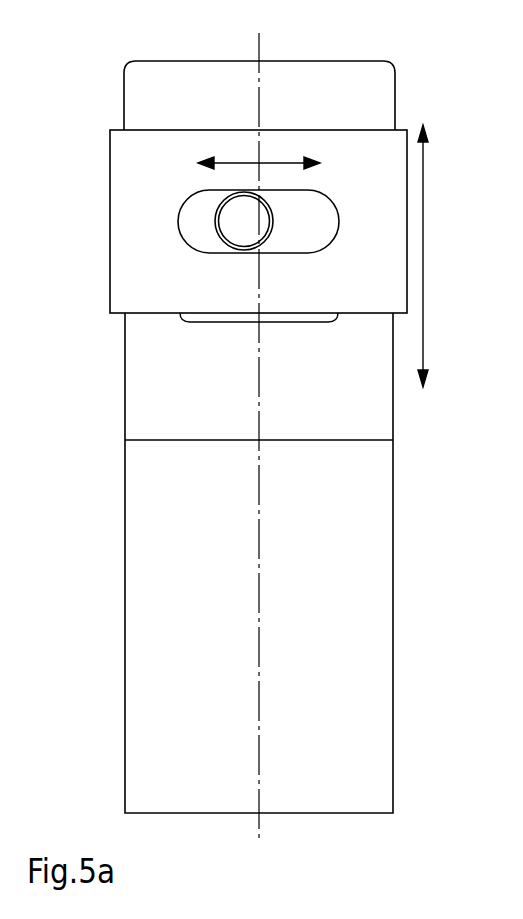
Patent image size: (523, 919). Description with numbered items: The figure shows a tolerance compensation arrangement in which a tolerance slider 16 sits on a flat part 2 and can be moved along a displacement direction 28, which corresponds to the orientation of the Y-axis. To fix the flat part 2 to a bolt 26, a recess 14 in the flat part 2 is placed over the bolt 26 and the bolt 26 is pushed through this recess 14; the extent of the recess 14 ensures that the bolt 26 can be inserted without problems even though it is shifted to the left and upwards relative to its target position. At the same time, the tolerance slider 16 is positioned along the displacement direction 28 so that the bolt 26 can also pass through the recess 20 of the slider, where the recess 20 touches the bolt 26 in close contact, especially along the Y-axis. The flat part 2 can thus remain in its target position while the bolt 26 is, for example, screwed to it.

The flat part 2 is at (181, 83).
The tolerance slider 16 is at (130, 179).
The recess 20 is at (310, 219).
The bolt 26 is at (240, 220).
The recess 14 is at (239, 317).
The displacement direction 28 is at (423, 257).